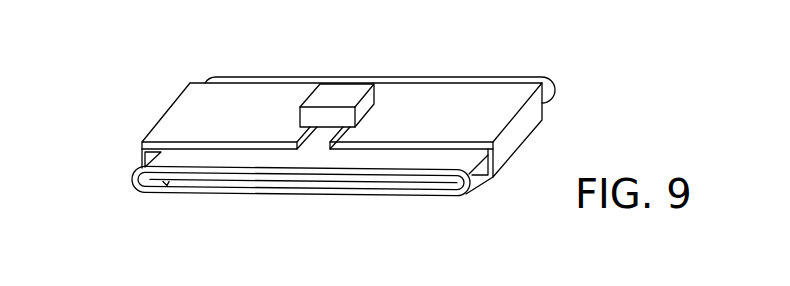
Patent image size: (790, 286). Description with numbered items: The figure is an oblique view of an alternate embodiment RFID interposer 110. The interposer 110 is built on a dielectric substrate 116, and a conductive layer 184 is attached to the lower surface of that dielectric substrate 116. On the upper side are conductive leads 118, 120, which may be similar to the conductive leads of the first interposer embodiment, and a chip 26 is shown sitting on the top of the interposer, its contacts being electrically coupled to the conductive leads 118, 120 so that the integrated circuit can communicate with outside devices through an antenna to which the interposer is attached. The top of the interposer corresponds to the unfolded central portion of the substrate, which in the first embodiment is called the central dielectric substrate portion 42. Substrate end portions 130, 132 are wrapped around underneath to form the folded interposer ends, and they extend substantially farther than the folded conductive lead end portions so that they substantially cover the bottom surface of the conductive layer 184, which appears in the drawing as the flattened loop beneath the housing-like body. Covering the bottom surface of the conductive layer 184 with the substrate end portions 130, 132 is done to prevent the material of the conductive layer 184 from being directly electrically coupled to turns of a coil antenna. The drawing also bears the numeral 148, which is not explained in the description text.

The interposer 110 is at (123, 78).
The conductive lead 118 is at (115, 117).
The central dielectric substrate portion 42 is at (293, 77).
The chip 26 is at (343, 93).
The dielectric substrate 116 is at (508, 82).
The conductive lead 120 is at (570, 133).
The conductive layer 184 is at (207, 183).
The substrate end portion 130 is at (270, 190).
The substrate end portion 132 is at (382, 183).
The strip end 148 is at (430, 183).